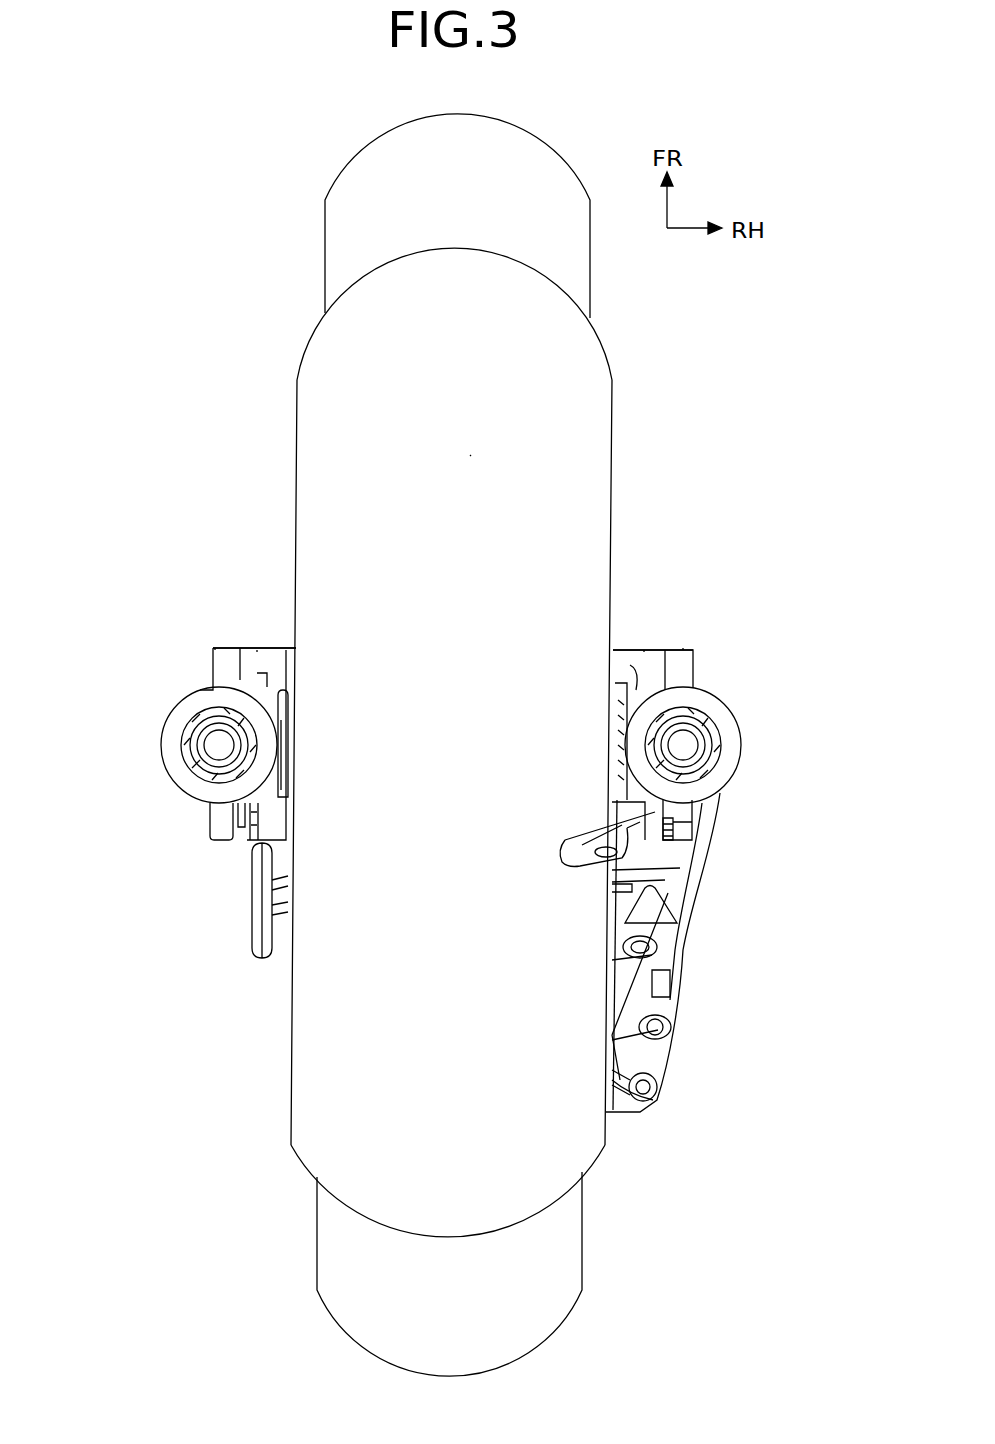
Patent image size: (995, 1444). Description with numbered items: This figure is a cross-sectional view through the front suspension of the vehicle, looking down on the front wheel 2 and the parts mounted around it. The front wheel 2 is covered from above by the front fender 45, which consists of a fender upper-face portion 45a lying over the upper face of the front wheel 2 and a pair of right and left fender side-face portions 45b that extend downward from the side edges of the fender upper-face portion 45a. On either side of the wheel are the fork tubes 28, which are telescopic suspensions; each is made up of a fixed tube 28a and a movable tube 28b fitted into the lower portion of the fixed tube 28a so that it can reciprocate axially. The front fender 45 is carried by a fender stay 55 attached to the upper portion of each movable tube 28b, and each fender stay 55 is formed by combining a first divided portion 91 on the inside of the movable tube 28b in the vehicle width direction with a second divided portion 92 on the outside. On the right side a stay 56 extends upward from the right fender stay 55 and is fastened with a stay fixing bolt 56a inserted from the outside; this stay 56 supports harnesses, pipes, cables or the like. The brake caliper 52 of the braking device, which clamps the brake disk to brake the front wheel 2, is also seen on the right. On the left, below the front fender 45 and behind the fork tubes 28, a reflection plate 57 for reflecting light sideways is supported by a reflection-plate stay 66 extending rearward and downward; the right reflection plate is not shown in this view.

The front wheel 2 is at (325, 242).
The front fender 45 is at (614, 412).
The fender upper-face portion 45a is at (470, 455).
The fender side-face portions 45b is at (277, 717).
The fork tubes 28 is at (55, 623).
The fixed tubes 28a is at (183, 713).
The movable tubes 28b is at (163, 736).
The fender stay 55 is at (90, 493).
The first divided portion 91 is at (257, 650).
The second divided portion 92 is at (215, 648).
The reflection plate 57 is at (255, 943).
The reflection-plate stay 66 is at (280, 890).
The stay 56 is at (640, 872).
The stay fixing bolt 56a is at (675, 822).
The brake caliper 52 is at (680, 982).